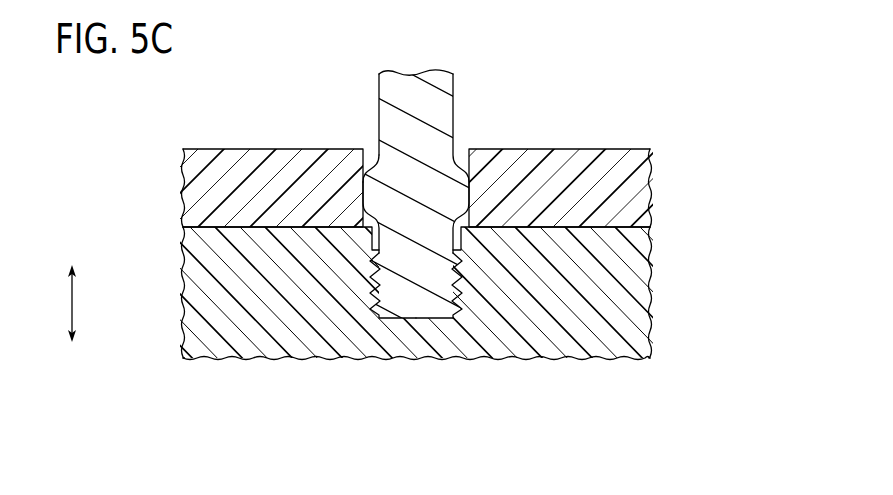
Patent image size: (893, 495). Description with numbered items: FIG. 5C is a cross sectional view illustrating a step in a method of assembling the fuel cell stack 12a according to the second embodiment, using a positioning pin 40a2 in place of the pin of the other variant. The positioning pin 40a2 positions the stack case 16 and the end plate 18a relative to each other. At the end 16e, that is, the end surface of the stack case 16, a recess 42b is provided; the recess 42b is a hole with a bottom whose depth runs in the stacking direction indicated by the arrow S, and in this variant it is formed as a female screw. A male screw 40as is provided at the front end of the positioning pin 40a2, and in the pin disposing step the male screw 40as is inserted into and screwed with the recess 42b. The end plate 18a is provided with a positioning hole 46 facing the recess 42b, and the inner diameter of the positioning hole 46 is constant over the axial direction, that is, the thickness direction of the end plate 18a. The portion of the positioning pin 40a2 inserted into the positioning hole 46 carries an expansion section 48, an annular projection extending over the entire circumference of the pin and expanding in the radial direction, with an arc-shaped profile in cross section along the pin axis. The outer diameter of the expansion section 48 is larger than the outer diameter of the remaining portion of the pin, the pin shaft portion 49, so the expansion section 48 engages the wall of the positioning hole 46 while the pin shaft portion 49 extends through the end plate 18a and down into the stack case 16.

The fuel cell stack 12a is at (236, 106).
The end plate 18a is at (585, 142).
The stack case 16 is at (660, 317).
The end 16e is at (620, 291).
The pin shaft portion 49 is at (455, 108).
The positioning pin 40a2 is at (370, 83).
The positioning hole 46 is at (376, 152).
The expansion section 48 is at (363, 187).
The male screw 40as is at (372, 290).
The recess 42b is at (453, 275).
The stacking direction S is at (66, 303).